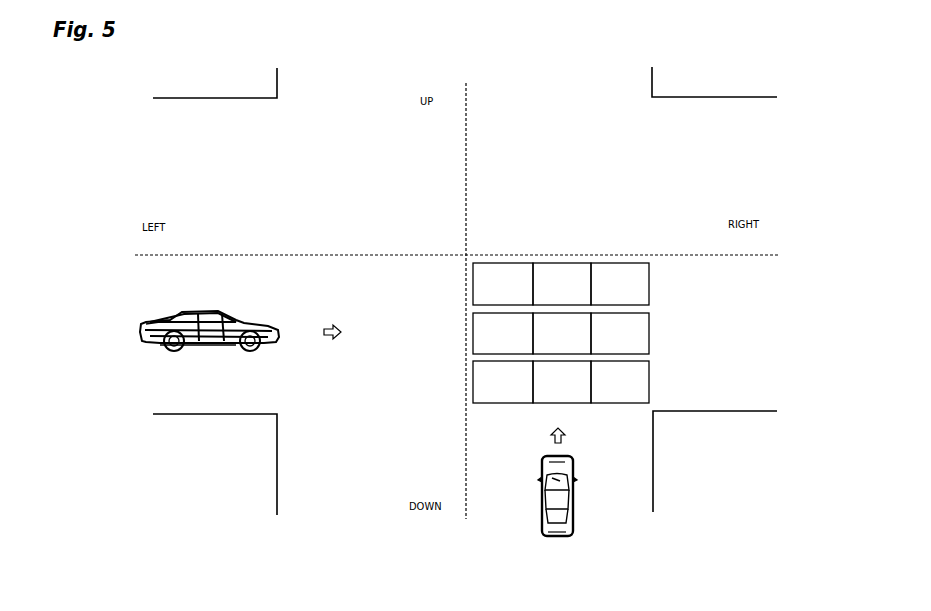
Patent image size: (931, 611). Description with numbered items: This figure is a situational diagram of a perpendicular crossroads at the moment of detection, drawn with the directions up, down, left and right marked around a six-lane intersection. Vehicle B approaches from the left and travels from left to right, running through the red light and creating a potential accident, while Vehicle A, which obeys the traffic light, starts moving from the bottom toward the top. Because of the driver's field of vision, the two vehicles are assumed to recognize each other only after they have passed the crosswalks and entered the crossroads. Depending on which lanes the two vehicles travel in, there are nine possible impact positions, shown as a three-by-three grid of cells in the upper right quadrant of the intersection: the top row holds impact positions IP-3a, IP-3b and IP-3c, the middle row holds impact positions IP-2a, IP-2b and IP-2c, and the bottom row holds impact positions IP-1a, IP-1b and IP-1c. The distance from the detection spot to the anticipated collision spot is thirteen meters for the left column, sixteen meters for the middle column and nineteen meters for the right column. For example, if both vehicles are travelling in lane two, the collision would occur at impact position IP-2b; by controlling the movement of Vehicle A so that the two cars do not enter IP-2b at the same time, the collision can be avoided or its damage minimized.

The Vehicle A is at (563, 496).
The Vehicle B is at (209, 322).
The impact position IP-1a is at (503, 382).
The impact position IP-1b is at (562, 382).
The impact position IP-1c is at (620, 382).
The impact position IP-2a is at (503, 333).
The impact position IP-2b is at (562, 333).
The impact position IP-2c is at (620, 333).
The impact position IP-3a is at (503, 284).
The impact position IP-3b is at (562, 284).
The impact position IP-3c is at (620, 284).